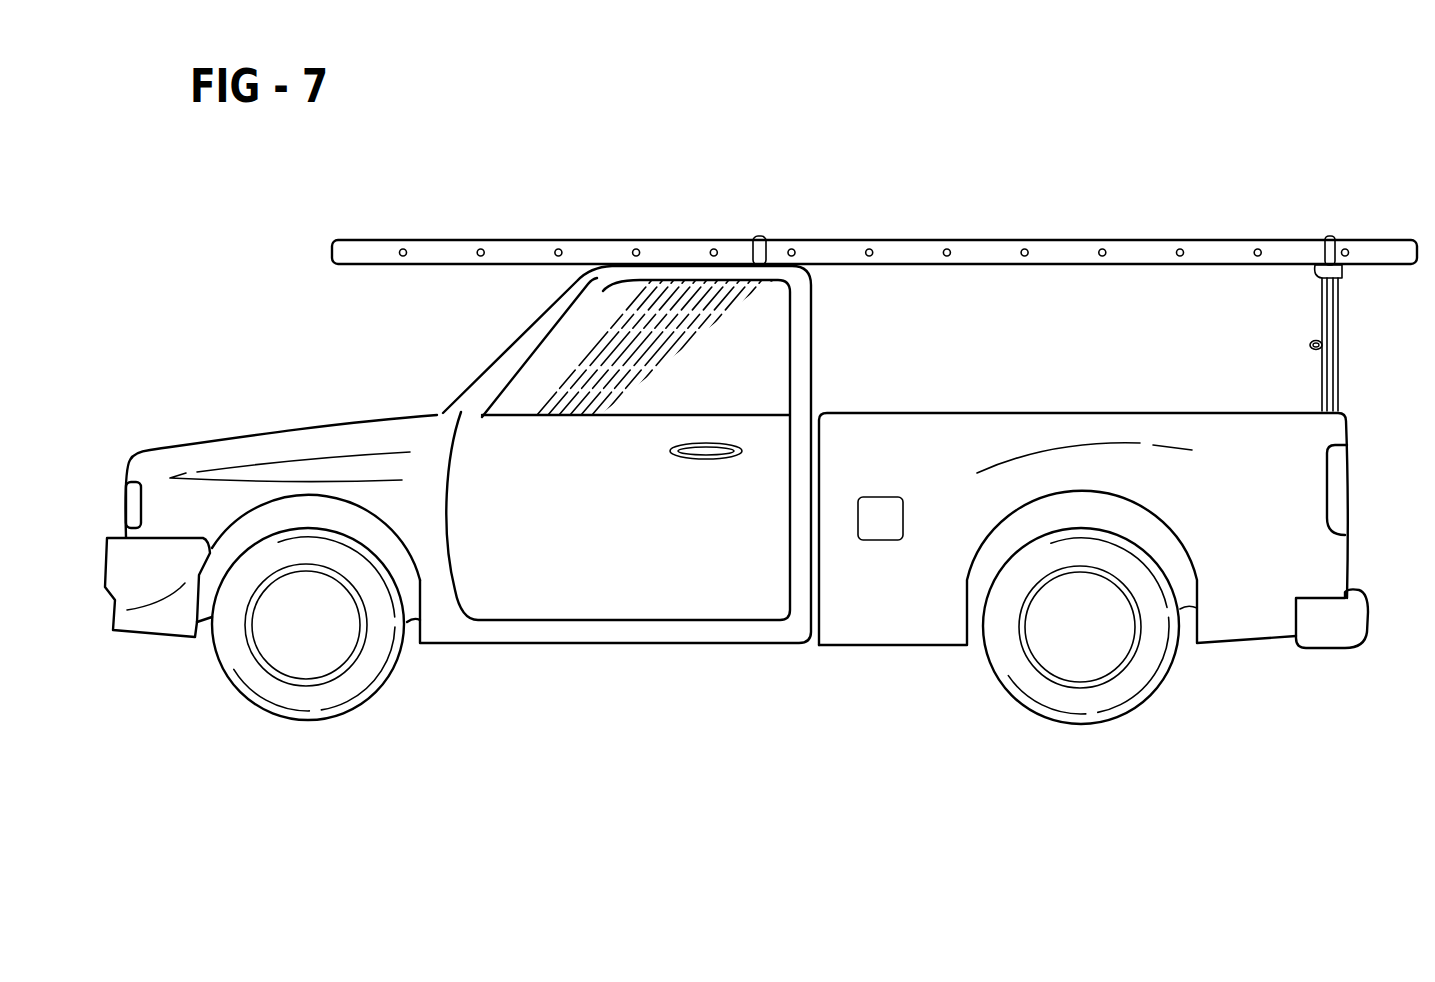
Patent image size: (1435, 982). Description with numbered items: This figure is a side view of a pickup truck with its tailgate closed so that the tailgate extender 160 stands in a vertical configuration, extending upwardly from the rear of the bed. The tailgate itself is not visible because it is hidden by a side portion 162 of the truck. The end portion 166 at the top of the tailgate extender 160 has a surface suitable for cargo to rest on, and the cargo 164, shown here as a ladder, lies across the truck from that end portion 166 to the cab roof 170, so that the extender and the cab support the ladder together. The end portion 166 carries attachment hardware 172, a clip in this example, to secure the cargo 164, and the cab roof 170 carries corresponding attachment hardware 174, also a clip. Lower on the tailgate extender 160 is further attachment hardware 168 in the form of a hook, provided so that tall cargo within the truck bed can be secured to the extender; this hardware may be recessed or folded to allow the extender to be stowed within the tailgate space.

The tailgate extender 160 is at (1332, 345).
The side portion 162 is at (1337, 482).
The cargo 164 is at (1143, 250).
The end portion of the tailgate extender 166 is at (1315, 275).
The attachment hardware 168 is at (1310, 345).
The cab roof 170 is at (797, 268).
The attachment hardware 172 is at (1329, 237).
The attachment hardware 174 is at (760, 237).